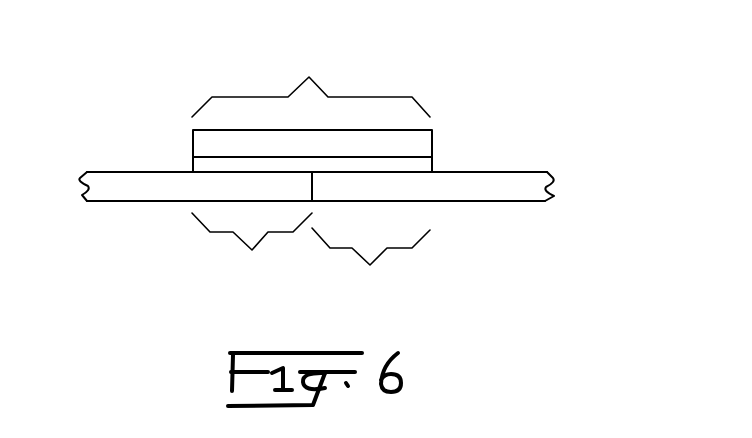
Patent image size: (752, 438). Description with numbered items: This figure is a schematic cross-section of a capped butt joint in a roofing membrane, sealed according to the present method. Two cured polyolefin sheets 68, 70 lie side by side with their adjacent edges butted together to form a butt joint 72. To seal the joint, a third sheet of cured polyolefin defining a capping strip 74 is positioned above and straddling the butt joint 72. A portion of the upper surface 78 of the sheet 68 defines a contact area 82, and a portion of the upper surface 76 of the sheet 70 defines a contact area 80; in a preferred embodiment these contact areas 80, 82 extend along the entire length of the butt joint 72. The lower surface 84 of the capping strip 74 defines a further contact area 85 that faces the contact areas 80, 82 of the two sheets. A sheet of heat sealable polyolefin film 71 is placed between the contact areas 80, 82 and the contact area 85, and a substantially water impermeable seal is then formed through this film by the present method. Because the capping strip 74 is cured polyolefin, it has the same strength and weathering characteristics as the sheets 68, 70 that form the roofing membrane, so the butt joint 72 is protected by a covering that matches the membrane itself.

The cured polyolefin sheet 68 is at (122, 187).
The cured polyolefin sheet 70 is at (513, 190).
The heat sealable polyolefin film 71 is at (433, 166).
The butt joint 72 is at (313, 186).
The capping strip 74 is at (433, 143).
The upper surface 76 is at (538, 173).
The upper surface 78 is at (97, 169).
The contact area 80 is at (371, 264).
The contact area 82 is at (252, 247).
The lower surface 84 is at (433, 154).
The contact area 85 is at (311, 78).